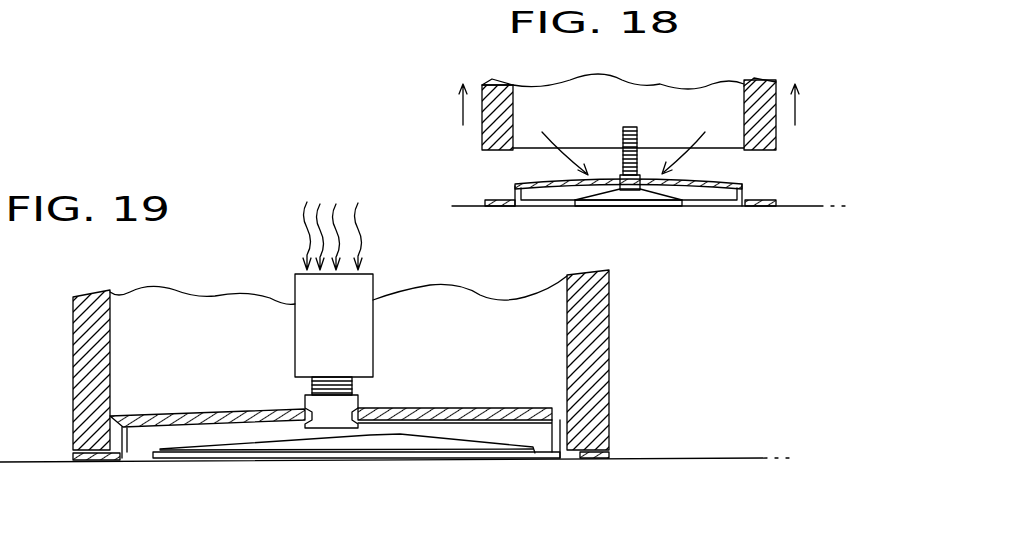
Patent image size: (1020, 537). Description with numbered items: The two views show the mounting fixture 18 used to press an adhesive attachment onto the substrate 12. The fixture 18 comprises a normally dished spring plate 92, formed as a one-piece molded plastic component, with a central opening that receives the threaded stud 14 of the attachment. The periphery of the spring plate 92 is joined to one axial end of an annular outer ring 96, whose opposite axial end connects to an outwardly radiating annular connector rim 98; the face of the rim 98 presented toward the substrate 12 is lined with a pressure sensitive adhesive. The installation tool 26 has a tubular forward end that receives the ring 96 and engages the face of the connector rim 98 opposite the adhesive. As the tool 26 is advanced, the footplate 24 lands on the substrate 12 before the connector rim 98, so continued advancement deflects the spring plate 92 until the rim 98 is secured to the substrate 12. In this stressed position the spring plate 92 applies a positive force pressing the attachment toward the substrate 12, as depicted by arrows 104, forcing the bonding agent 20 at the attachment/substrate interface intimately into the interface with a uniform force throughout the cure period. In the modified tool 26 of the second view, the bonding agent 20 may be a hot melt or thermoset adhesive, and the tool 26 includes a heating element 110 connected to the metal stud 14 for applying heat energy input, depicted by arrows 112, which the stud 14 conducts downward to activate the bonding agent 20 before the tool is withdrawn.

In FIG. 18, the substrate 12 is at (445, 205).
In FIG. 19, the substrate 12 is at (690, 457).
In FIG. 18, the threaded stud 14 is at (637, 134).
In FIG. 19, the threaded stud 14 is at (355, 386).
In FIG. 19, the mounting fixture 18 is at (208, 401).
In FIG. 18, the bonding agent 20 is at (593, 207).
In FIG. 19, the bonding agent 20 is at (232, 462).
In FIG. 18, the footplate 24 is at (647, 200).
In FIG. 19, the footplate 24 is at (370, 443).
In FIG. 18, the installation tool 26 is at (497, 83).
In FIG. 19, the installation tool 26 is at (608, 345).
In FIG. 18, the spring plate 92 is at (703, 180).
In FIG. 19, the spring plate 92 is at (465, 410).
In FIG. 18, the annular outer ring 96 is at (745, 190).
In FIG. 19, the annular outer ring 96 is at (560, 432).
In FIG. 18, the annular connector rim 98 is at (775, 207).
In FIG. 19, the annular connector rim 98 is at (593, 460).
In FIG. 18, the arrows 104 is at (569, 137).
In FIG. 19, the heating element 110 is at (362, 353).
In FIG. 19, the arrows 112 is at (358, 238).